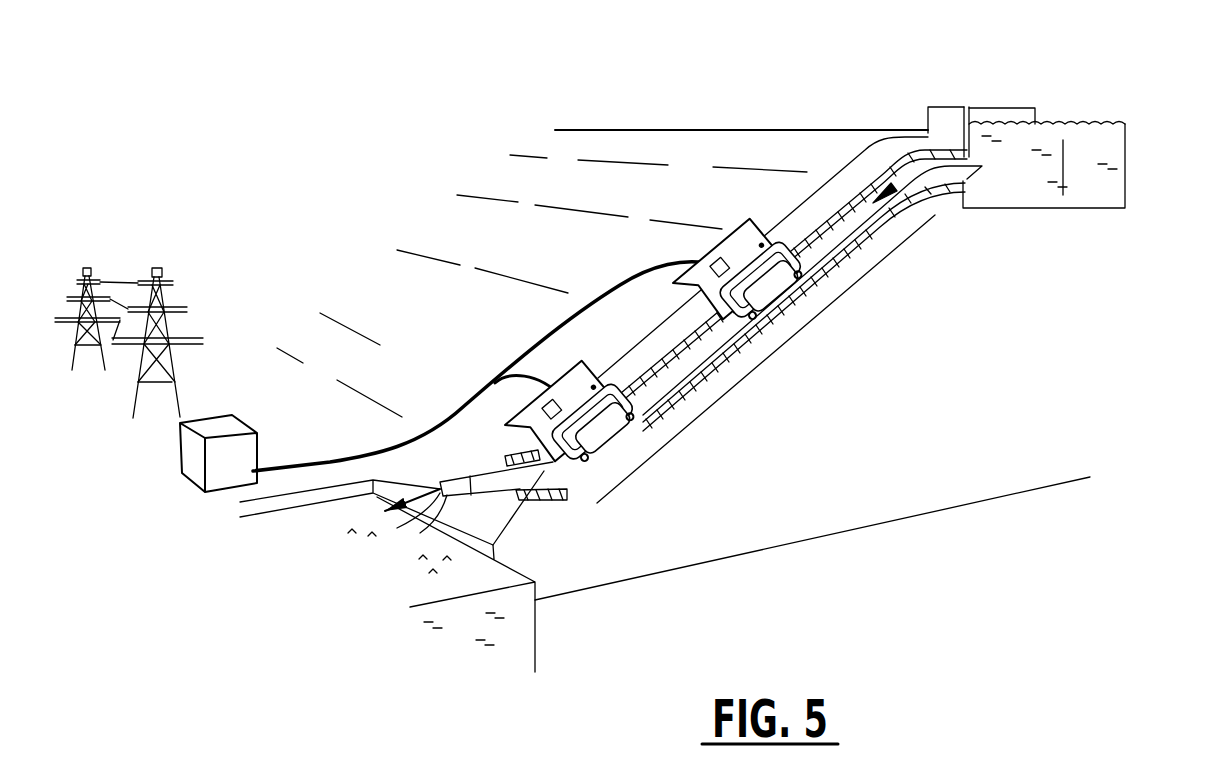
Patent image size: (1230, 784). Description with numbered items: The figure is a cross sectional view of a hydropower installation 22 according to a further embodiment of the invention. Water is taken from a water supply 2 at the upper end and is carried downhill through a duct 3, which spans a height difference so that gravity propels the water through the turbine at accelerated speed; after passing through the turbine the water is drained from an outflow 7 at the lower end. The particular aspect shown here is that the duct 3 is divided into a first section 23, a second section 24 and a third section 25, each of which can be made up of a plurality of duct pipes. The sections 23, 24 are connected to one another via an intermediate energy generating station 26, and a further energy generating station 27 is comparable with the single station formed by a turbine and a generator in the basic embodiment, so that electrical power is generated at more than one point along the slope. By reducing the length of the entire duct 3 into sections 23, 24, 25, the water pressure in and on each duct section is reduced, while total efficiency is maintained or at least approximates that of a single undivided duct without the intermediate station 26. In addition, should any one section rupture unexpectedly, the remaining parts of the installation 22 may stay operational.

The water supply 2 is at (1088, 137).
The duct 3 is at (645, 320).
The outflow 7 is at (453, 482).
The hydropower installation 22 is at (403, 210).
The duct section 23 is at (843, 150).
The duct section 24 is at (733, 378).
The duct section 25 is at (545, 475).
The intermediate energy generating station 26 is at (717, 217).
The energy generating station 27 is at (541, 357).